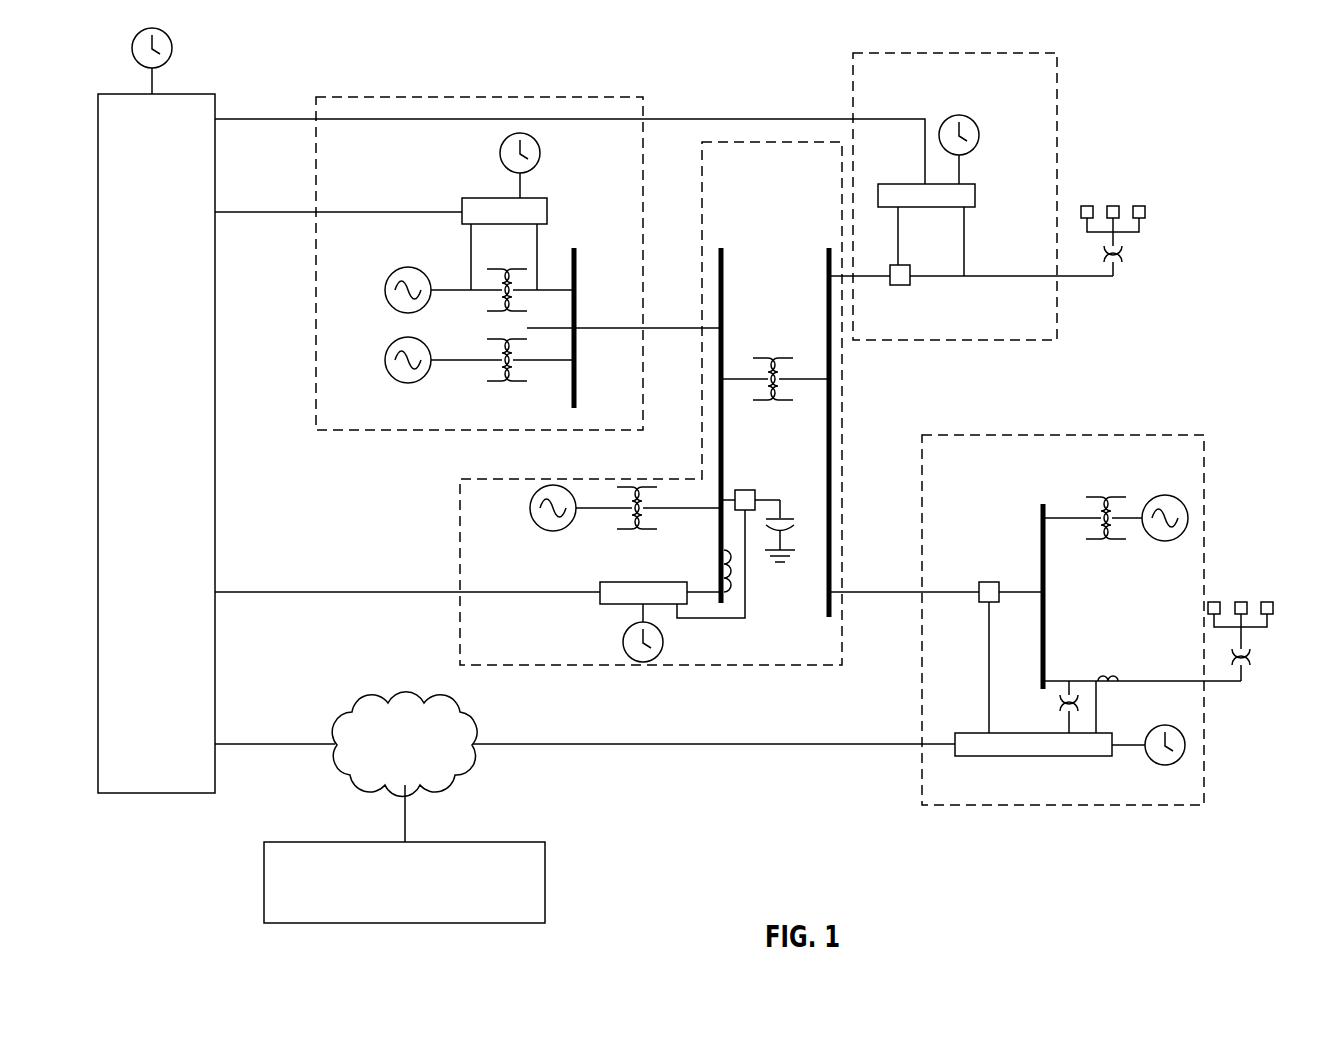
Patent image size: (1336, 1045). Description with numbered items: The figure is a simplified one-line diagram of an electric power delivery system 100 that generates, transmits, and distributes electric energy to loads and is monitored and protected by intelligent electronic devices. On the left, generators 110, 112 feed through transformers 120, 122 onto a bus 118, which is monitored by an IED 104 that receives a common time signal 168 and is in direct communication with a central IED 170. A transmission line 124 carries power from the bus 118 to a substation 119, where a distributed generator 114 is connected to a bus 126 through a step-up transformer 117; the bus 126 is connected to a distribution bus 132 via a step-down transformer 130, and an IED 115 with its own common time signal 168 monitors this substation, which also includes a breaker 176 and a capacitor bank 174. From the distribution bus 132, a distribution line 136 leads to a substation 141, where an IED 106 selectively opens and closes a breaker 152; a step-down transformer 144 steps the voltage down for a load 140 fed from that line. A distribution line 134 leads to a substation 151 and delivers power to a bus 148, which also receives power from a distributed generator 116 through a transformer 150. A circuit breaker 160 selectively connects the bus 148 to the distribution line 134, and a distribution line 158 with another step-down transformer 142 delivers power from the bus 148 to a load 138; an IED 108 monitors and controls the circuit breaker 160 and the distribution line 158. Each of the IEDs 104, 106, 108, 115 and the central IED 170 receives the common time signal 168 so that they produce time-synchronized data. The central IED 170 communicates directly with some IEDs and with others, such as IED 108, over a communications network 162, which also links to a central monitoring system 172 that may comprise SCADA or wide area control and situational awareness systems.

The electric power delivery system 100 is at (1176, 120).
The IED 104 is at (483, 198).
The IED 106 is at (897, 184).
The IED 108 is at (1083, 757).
The generator 110 is at (385, 290).
The generator 112 is at (385, 360).
The generator 114 is at (530, 508).
The IED 115 is at (676, 582).
The distributed generator 116 is at (1152, 541).
The step-up transformer 117 is at (633, 520).
The bus 118 is at (577, 392).
The substation 119 is at (585, 666).
The transformer 120 is at (487, 307).
The transformer 122 is at (507, 384).
The transmission line 124 is at (660, 330).
The bus 126 is at (725, 400).
The step-down transformer 130 is at (780, 358).
The distribution bus 132 is at (827, 584).
The distribution line 134 is at (932, 594).
The distribution line 136 is at (868, 278).
The load 138 is at (1241, 600).
The load 140 is at (1150, 210).
The substation 141 is at (1030, 341).
The step-down transformer 142 is at (1254, 654).
The step-down transformer 144 is at (1125, 252).
The bus 148 is at (1040, 506).
The transformer 150 is at (1108, 497).
The substation 151 is at (1135, 806).
The breaker 152 is at (910, 284).
The distribution line 158 is at (1136, 678).
The circuit breaker 160 is at (986, 582).
The communications network 162 is at (423, 769).
The common time signal 168 is at (172, 46).
The central IED 170 is at (174, 467).
The central monitoring system 172 is at (422, 906).
The capacitor bank 174 is at (790, 517).
The breaker 176 is at (745, 490).